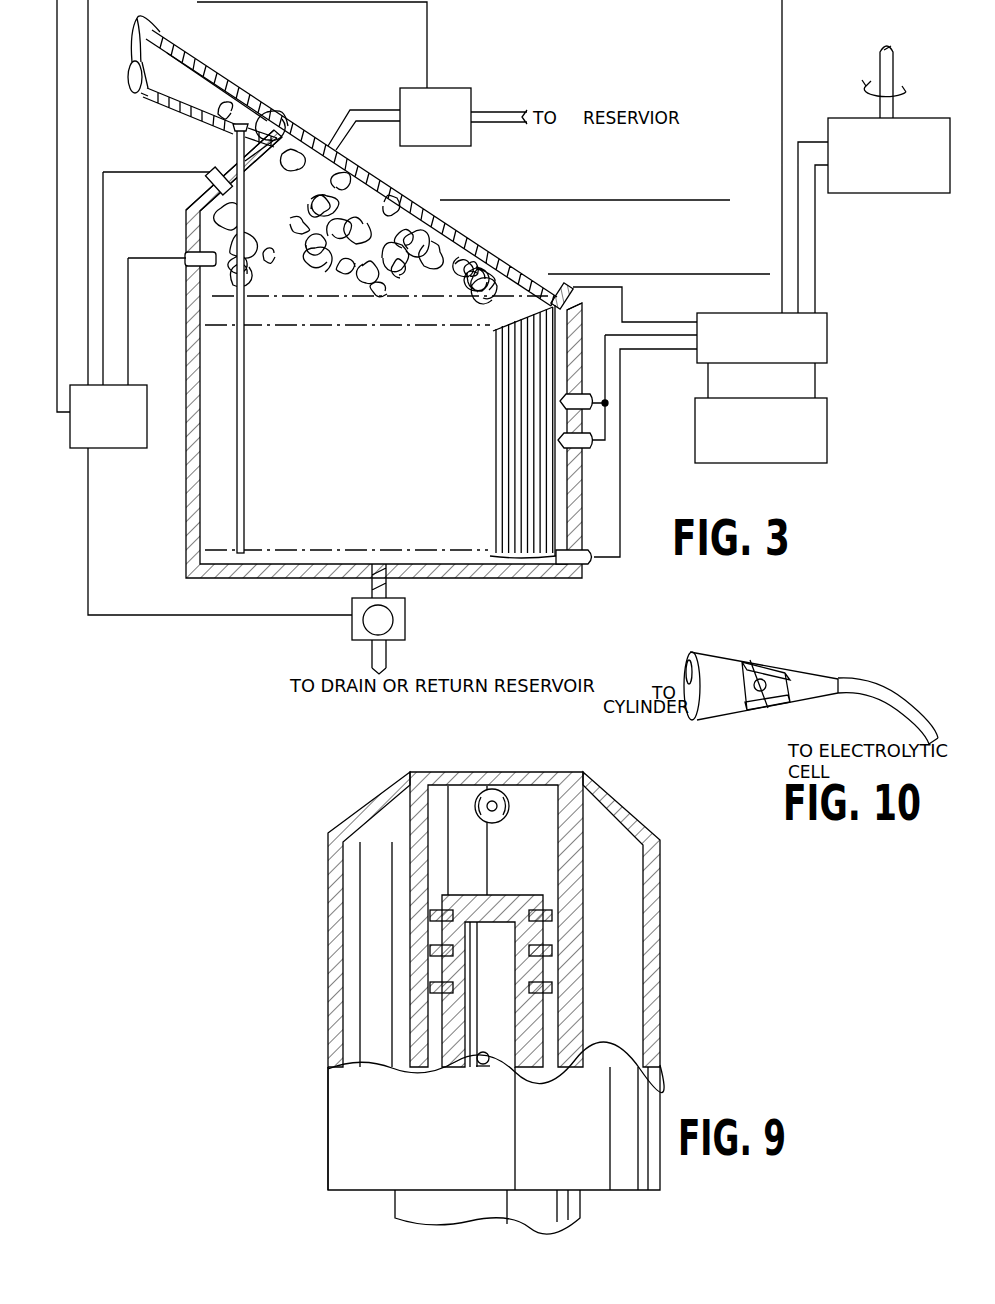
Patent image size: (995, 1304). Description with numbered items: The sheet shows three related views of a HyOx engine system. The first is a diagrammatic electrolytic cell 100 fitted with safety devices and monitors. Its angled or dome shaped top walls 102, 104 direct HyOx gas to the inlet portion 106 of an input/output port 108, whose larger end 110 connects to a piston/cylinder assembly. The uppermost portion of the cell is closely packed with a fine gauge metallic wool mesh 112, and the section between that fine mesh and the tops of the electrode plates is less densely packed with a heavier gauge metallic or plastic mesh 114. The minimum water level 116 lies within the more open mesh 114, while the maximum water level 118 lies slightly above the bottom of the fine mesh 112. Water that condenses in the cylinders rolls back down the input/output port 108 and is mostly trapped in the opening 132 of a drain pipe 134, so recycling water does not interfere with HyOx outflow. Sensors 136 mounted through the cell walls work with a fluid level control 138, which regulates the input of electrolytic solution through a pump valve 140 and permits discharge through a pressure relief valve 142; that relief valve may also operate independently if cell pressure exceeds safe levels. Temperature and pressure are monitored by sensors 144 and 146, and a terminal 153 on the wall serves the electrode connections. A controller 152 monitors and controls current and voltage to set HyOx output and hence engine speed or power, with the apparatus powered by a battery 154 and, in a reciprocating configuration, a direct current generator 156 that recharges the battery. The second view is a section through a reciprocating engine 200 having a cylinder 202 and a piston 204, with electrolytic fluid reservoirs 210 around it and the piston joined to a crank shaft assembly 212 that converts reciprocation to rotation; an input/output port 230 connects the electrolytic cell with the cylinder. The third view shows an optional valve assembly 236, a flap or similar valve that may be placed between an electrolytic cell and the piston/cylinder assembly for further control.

In FIG. 3, the electrolytic cell 100 is at (186, 510).
In FIG. 3, the top wall 102 is at (233, 172).
In FIG. 3, the top wall 104 is at (515, 252).
In FIG. 3, the inlet portion 106 is at (267, 98).
In FIG. 3, the input/output port 108 is at (207, 82).
In FIG. 3, the larger end 110 is at (157, 30).
In FIG. 3, the metallic wool mesh 112 is at (388, 182).
In FIG. 3, the heavier gauge mesh 114 is at (463, 243).
In FIG. 3, the minimum water level 116 is at (652, 276).
In FIG. 3, the maximum water level 118 is at (587, 202).
In FIG. 3, the opening 132 is at (236, 124).
In FIG. 3, the drain pipe 134 is at (244, 488).
In FIG. 3, the sensors 136 is at (208, 184).
In FIG. 3, the fluid level control 138 is at (156, 383).
In FIG. 3, the pump valve 140 is at (452, 64).
In FIG. 3, the pressure relief valve 142 is at (352, 602).
In FIG. 3, the temperature sensor 144 is at (592, 393).
In FIG. 3, the pressure sensor 146 is at (590, 449).
In FIG. 3, the controller 152 is at (828, 330).
In FIG. 3, the bottom terminal 153 is at (578, 563).
In FIG. 3, the battery 154 is at (828, 422).
In FIG. 3, the direct current generator 156 is at (867, 195).
In FIG. 9, the engine 200 is at (326, 1139).
In FIG. 9, the cylinder 202 is at (460, 806).
In FIG. 9, the piston 204 is at (486, 895).
In FIG. 9, the electrolytic fluid reservoirs 210 is at (632, 911).
In FIG. 9, the crank shaft assembly 212 is at (358, 963).
In FIG. 9, the input/output port 230 is at (500, 793).
In FIG. 10, the nozzle collar 236 is at (746, 663).